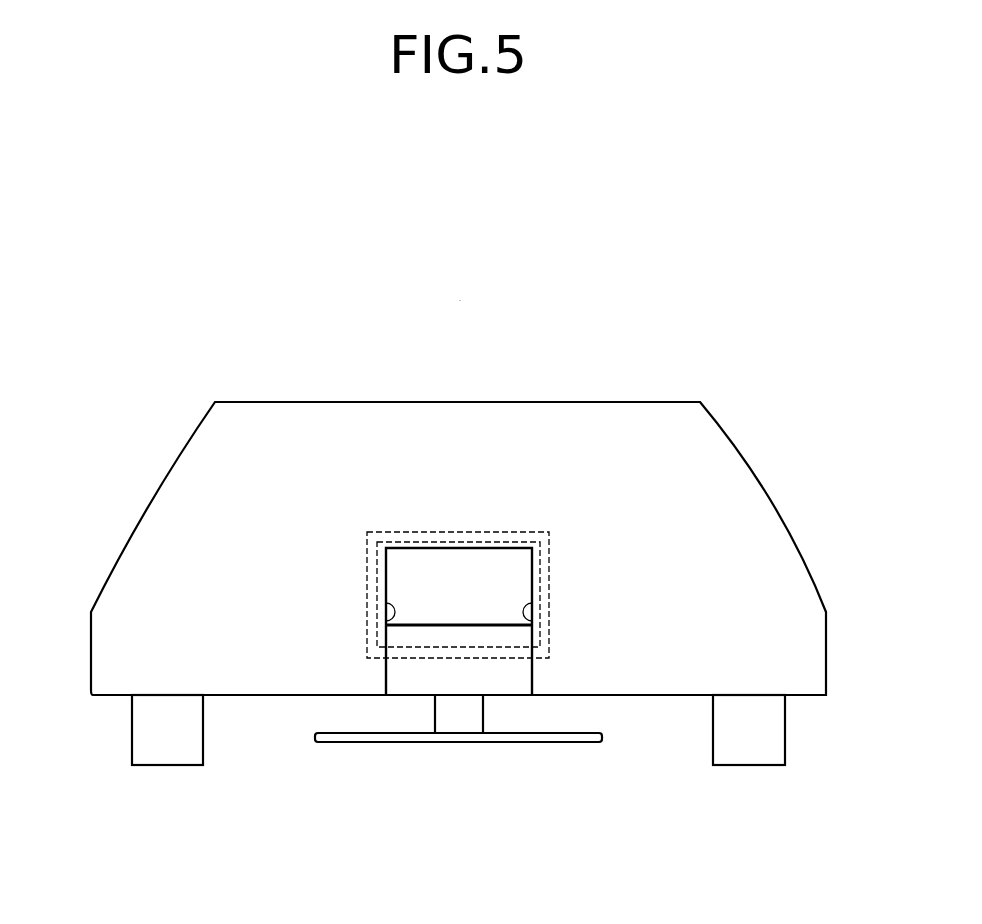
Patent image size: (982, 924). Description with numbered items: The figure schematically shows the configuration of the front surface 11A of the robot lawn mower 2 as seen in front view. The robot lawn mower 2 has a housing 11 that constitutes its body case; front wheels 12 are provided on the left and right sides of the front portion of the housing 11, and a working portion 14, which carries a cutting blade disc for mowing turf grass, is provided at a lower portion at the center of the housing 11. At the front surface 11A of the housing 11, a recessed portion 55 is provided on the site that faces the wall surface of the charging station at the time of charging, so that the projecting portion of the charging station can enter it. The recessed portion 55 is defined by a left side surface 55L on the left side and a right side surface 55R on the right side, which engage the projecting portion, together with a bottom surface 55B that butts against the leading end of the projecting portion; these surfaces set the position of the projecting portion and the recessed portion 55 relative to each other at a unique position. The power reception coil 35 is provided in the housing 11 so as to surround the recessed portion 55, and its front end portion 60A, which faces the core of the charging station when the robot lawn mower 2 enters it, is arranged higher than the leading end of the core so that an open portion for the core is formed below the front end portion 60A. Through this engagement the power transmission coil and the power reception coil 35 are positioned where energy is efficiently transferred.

The robot lawn mower 2 is at (460, 350).
The housing 11 is at (674, 400).
The front surface 11A is at (652, 578).
The front wheels 12 is at (131, 738).
The working portion 14 is at (533, 750).
The power reception coil 35 is at (500, 531).
The recessed portion 55 is at (408, 578).
The bottom surface 55B is at (486, 606).
The left side surface 55L is at (388, 620).
The right side surface 55R is at (531, 622).
The front end portion 60A is at (449, 532).